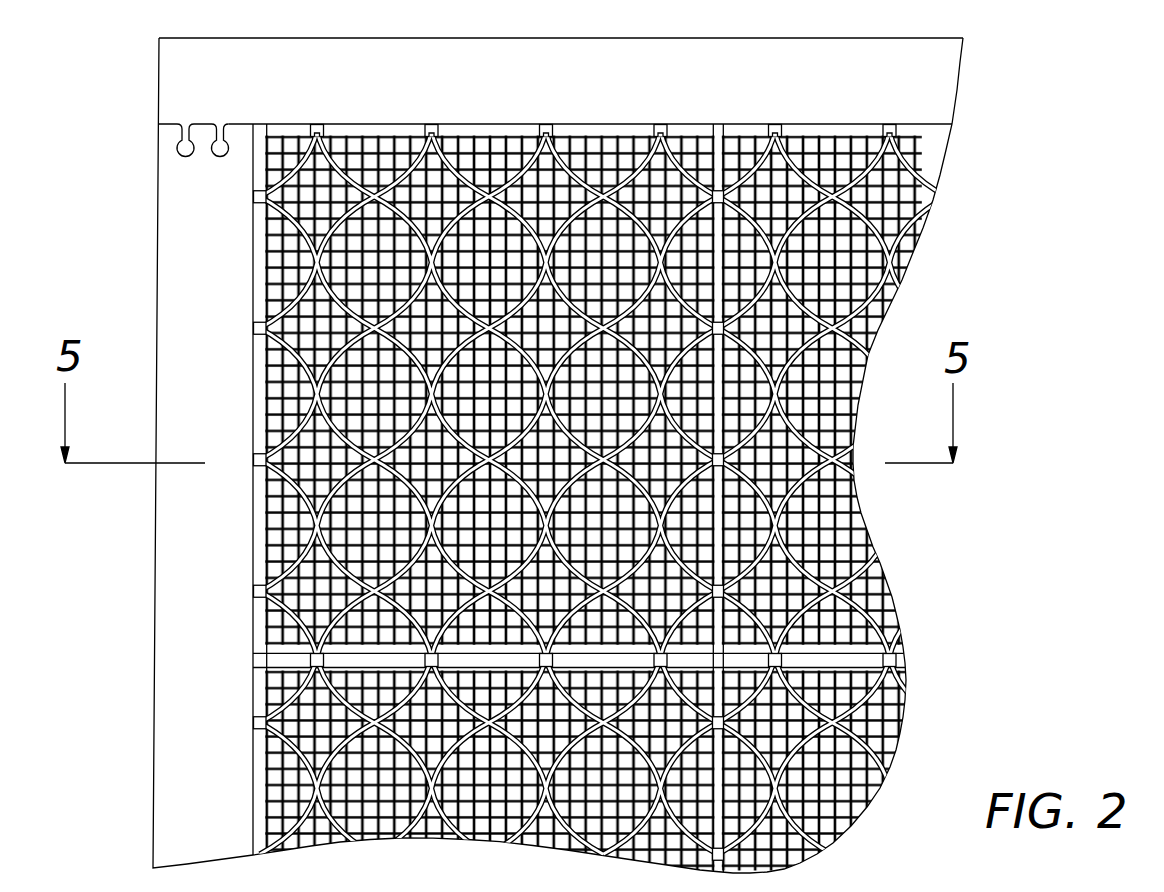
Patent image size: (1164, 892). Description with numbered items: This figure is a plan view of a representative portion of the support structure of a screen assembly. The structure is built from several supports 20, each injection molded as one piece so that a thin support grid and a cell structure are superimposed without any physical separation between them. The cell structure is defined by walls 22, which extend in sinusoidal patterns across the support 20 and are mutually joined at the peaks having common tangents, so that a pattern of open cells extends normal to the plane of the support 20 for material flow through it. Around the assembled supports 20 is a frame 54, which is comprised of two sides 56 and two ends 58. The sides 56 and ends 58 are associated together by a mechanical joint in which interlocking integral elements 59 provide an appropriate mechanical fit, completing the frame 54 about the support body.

The support 20 is at (835, 137).
The walls 22 is at (465, 150).
The frame 54 is at (935, 88).
The sides 56 is at (927, 38).
The ends 58 is at (165, 260).
The interlocking integral elements 59 is at (180, 157).